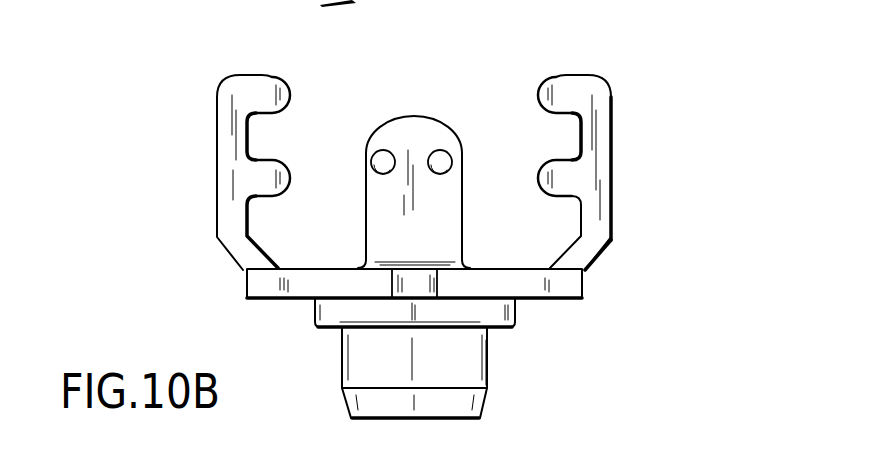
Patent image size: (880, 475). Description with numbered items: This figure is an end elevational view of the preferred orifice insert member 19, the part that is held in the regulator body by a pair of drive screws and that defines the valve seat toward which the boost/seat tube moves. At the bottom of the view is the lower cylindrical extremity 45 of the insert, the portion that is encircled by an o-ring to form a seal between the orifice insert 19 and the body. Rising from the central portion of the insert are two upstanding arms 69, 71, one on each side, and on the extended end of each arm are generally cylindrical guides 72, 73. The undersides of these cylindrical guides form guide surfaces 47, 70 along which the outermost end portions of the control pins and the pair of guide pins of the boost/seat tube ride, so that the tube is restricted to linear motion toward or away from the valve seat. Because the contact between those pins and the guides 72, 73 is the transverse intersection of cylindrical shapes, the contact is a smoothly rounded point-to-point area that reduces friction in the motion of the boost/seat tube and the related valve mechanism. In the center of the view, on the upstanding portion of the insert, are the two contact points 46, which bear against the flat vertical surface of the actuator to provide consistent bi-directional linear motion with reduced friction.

The orifice insert member 19 is at (494, 71).
The lower cylindrical extremity 45 is at (463, 358).
The contact points 46 is at (437, 160).
The guide surface 47 is at (248, 145).
The upstanding arm 69 is at (227, 135).
The guide surface 70 is at (270, 128).
The upstanding arm 71 is at (220, 245).
The cylindrical guide 72 is at (276, 196).
The cylindrical guide 73 is at (290, 82).